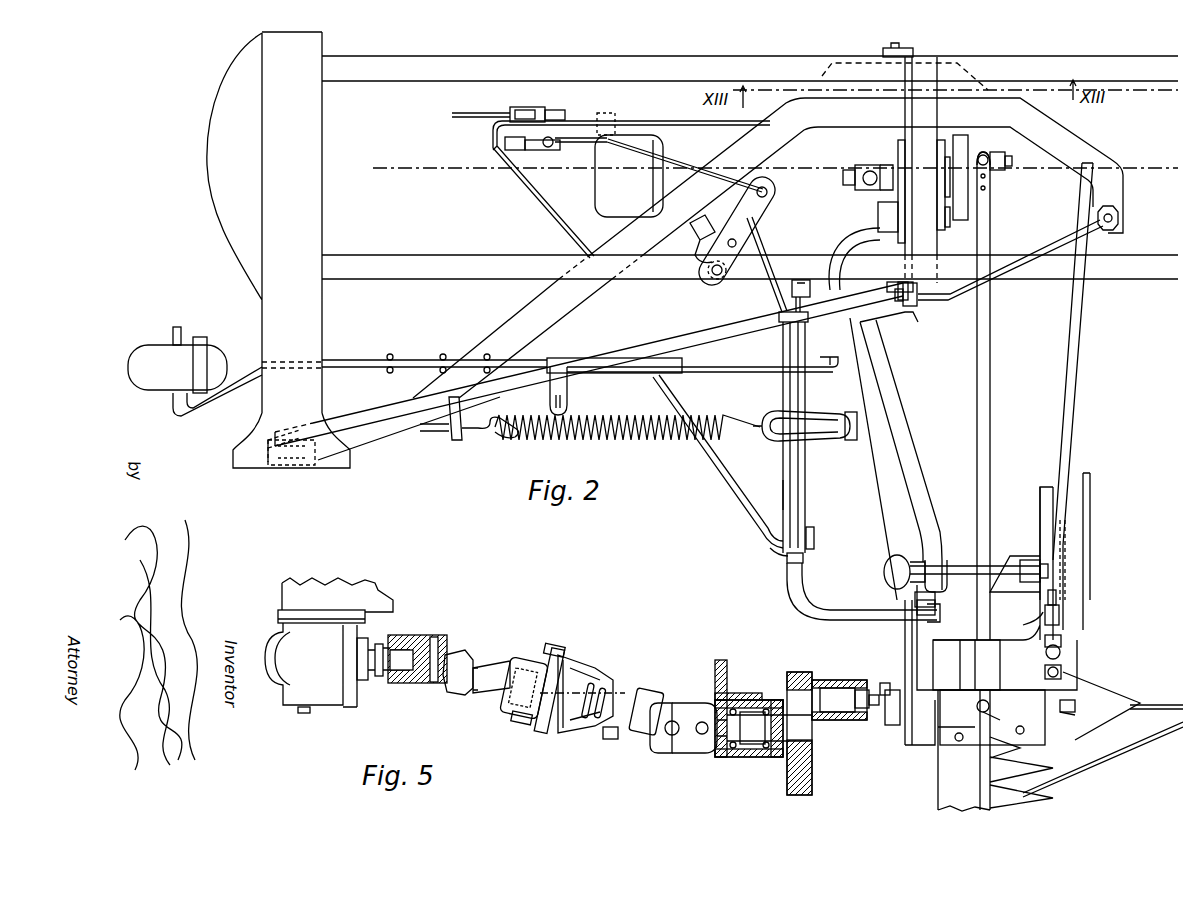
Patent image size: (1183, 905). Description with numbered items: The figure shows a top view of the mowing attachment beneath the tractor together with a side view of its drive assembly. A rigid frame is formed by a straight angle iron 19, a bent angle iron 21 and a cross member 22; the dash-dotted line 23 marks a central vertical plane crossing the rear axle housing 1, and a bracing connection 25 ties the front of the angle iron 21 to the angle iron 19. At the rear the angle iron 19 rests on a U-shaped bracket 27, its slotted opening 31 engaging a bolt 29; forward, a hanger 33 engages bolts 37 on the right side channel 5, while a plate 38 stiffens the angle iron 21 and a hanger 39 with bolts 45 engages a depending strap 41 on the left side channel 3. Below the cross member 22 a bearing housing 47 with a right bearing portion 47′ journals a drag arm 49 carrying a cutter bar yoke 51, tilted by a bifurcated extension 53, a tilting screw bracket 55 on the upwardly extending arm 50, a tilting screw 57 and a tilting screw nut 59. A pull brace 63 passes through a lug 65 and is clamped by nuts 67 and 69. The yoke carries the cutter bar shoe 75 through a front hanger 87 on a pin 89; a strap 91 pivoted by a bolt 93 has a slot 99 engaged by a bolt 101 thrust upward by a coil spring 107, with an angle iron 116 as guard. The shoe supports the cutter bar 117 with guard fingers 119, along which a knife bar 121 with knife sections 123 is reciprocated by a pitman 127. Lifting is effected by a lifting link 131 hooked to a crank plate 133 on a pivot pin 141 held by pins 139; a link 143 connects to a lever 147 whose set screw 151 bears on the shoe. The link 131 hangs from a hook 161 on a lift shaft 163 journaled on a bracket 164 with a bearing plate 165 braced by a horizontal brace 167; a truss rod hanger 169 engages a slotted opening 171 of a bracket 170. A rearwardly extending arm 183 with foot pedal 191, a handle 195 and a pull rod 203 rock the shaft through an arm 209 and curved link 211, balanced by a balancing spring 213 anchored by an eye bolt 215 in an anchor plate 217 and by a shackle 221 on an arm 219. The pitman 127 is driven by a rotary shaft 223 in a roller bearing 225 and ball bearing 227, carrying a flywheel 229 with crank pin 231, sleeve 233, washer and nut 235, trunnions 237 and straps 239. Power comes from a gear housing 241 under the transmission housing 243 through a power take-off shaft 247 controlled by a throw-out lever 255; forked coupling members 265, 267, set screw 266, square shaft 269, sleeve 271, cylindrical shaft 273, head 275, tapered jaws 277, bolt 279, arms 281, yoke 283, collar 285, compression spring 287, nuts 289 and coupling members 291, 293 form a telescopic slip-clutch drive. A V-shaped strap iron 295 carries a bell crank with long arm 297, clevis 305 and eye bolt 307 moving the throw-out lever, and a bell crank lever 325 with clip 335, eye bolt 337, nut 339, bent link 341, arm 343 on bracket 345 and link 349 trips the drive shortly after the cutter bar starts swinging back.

In FIG. 2, the rear axle housing 1 is at (212, 196).
In FIG. 2, the side channel 3 is at (368, 81).
In FIG. 2, the side channel 5 is at (372, 262).
In FIG. 2, the angle iron 19 is at (400, 430).
In FIG. 2, the bent angle iron 21 is at (812, 118).
In FIG. 2, the cross member 22 is at (936, 245).
In FIG. 5, the cross member 22 is at (727, 680).
In FIG. 2, the dash-dotted line 23 is at (1158, 168).
In FIG. 2, the bracing connection 25 is at (1050, 246).
In FIG. 2, the bracket 27 is at (318, 466).
In FIG. 2, the bolt 29 is at (295, 466).
In FIG. 2, the slotted opening 31 is at (268, 447).
In FIG. 2, the hanger 33 is at (898, 282).
In FIG. 2, the bolts 37 is at (895, 292).
In FIG. 2, the plate 38 is at (828, 76).
In FIG. 2, the hanger 39 is at (958, 54).
In FIG. 2, the depending strap 41 is at (930, 46).
In FIG. 2, the bolts 45 is at (893, 45).
In FIG. 2, the bearing housing 47 is at (898, 145).
In FIG. 2, the right bearing portion 47′ is at (887, 232).
In FIG. 2, the drag arm 49 is at (898, 428).
In FIG. 2, the upwardly extending arm 50 is at (936, 595).
In FIG. 2, the cutter bar yoke 51 is at (1006, 648).
In FIG. 2, the bifurcated extension 53 is at (1005, 555).
In FIG. 2, the tilting screw bracket 55 is at (940, 558).
In FIG. 2, the tilting screw 57 is at (895, 558).
In FIG. 2, the tilting screw nut 59 is at (1032, 562).
In FIG. 2, the pull brace 63 is at (1076, 399).
In FIG. 2, the lug 65 is at (1060, 612).
In FIG. 2, the nut 67 is at (1030, 622).
In FIG. 2, the nut 69 is at (1047, 598).
In FIG. 2, the cutter bar shoe 75 is at (1110, 690).
In FIG. 2, the front hanger 87 is at (1063, 712).
In FIG. 2, the pin 89 is at (1076, 705).
In FIG. 2, the strap 91 is at (1040, 492).
In FIG. 2, the bolt 93 is at (1046, 668).
In FIG. 2, the longitudinal slot 99 is at (1055, 528).
In FIG. 2, the bolt 101 is at (1062, 654).
In FIG. 2, the coil spring 107 is at (1065, 640).
In FIG. 2, the angle iron 116 is at (1084, 525).
In FIG. 2, the cutter bar 117 is at (940, 783).
In FIG. 2, the guard fingers 119 is at (1045, 792).
In FIG. 2, the knife bar 121 is at (980, 790).
In FIG. 2, the knife sections 123 is at (1010, 750).
In FIG. 2, the pitman 127 is at (990, 404).
In FIG. 2, the vertical lifting link 131 is at (905, 632).
In FIG. 2, the crank plate 133 is at (910, 660).
In FIG. 2, the pins 139 is at (945, 660).
In FIG. 2, the pivot pin 141 is at (945, 690).
In FIG. 2, the link 143 is at (910, 744).
In FIG. 2, the lever 147 is at (905, 735).
In FIG. 2, the set screw 151 is at (888, 683).
In FIG. 2, the hook 161 is at (938, 612).
In FIG. 2, the lift shaft 163 is at (799, 498).
In FIG. 2, the bracket 164 is at (782, 495).
In FIG. 2, the bearing plate 165 is at (770, 540).
In FIG. 2, the horizontal brace 167 is at (745, 508).
In FIG. 2, the truss rod hanger 169 is at (813, 530).
In FIG. 2, the bracket 170 is at (778, 291).
In FIG. 2, the slotted opening 171 is at (810, 288).
In FIG. 2, the rearwardly extending arm 183 is at (356, 359).
In FIG. 2, the foot pedal 191 is at (155, 348).
In FIG. 2, the handle 195 is at (568, 393).
In FIG. 2, the pull rod 203 is at (620, 375).
In FIG. 2, the arm 209 is at (823, 354).
In FIG. 2, the curved link 211 is at (720, 372).
In FIG. 2, the balancing spring 213 is at (627, 437).
In FIG. 2, the eye bolt 215 is at (497, 440).
In FIG. 2, the anchor plate 217 is at (450, 440).
In FIG. 2, the arm 219 is at (847, 414).
In FIG. 2, the shackle 221 is at (762, 437).
In FIG. 5, the rotary shaft 223 is at (745, 745).
In FIG. 5, the roller bearing 225 is at (775, 758).
In FIG. 5, the ball bearing 227 is at (718, 758).
In FIG. 2, the flywheel 229 is at (968, 145).
In FIG. 5, the flywheel 229 is at (809, 786).
In FIG. 2, the crank pin 231 is at (1013, 151).
In FIG. 5, the crank pin 231 is at (852, 712).
In FIG. 5, the sleeve 233 is at (841, 679).
In FIG. 2, the washer and nut 235 is at (1005, 168).
In FIG. 5, the washer and nut 235 is at (858, 691).
In FIG. 5, the trunnions 237 is at (825, 679).
In FIG. 2, the straps 239 is at (990, 188).
In FIG. 2, the gear housing 241 is at (595, 188).
In FIG. 5, the gear housing 241 is at (290, 690).
In FIG. 5, the transmission housing 243 is at (372, 574).
In FIG. 5, the power take-off shaft 247 is at (398, 680).
In FIG. 2, the throw-out lever 255 is at (607, 113).
In FIG. 5, the forked coupling member 265 is at (423, 633).
In FIG. 5, the set screw 266 is at (398, 635).
In FIG. 5, the forked coupling member 267 is at (458, 648).
In FIG. 5, the square shaft 269 is at (488, 662).
In FIG. 5, the sleeve 271 is at (575, 730).
In FIG. 2, the cylindrical shaft 273 is at (843, 178).
In FIG. 5, the cylindrical shaft 273 is at (590, 672).
In FIG. 5, the head 275 is at (640, 700).
In FIG. 5, the tapered jaws 277 is at (617, 692).
In FIG. 5, the bolt 279 is at (612, 740).
In FIG. 5, the arms 281 is at (575, 655).
In FIG. 5, the yoke 283 is at (525, 658).
In FIG. 5, the collar 285 is at (487, 692).
In FIG. 5, the compression spring 287 is at (512, 712).
In FIG. 5, the nuts 289 is at (560, 647).
In FIG. 2, the coupling member 291 is at (850, 165).
In FIG. 5, the coupling member 291 is at (658, 752).
In FIG. 2, the coupling member 293 is at (868, 195).
In FIG. 5, the coupling member 293 is at (690, 755).
In FIG. 2, the strap iron 295 is at (695, 121).
In FIG. 2, the long arm 297 is at (465, 118).
In FIG. 2, the clevis 305 is at (532, 107).
In FIG. 2, the eye bolt 307 is at (560, 110).
In FIG. 2, the bell crank lever 325 is at (505, 143).
In FIG. 2, the clip 335 is at (534, 150).
In FIG. 2, the eye bolt 337 is at (553, 146).
In FIG. 2, the nut 339 is at (500, 155).
In FIG. 2, the bent link 341 is at (693, 165).
In FIG. 2, the arm 343 is at (763, 207).
In FIG. 2, the bracket 345 is at (706, 242).
In FIG. 2, the link 349 is at (872, 458).